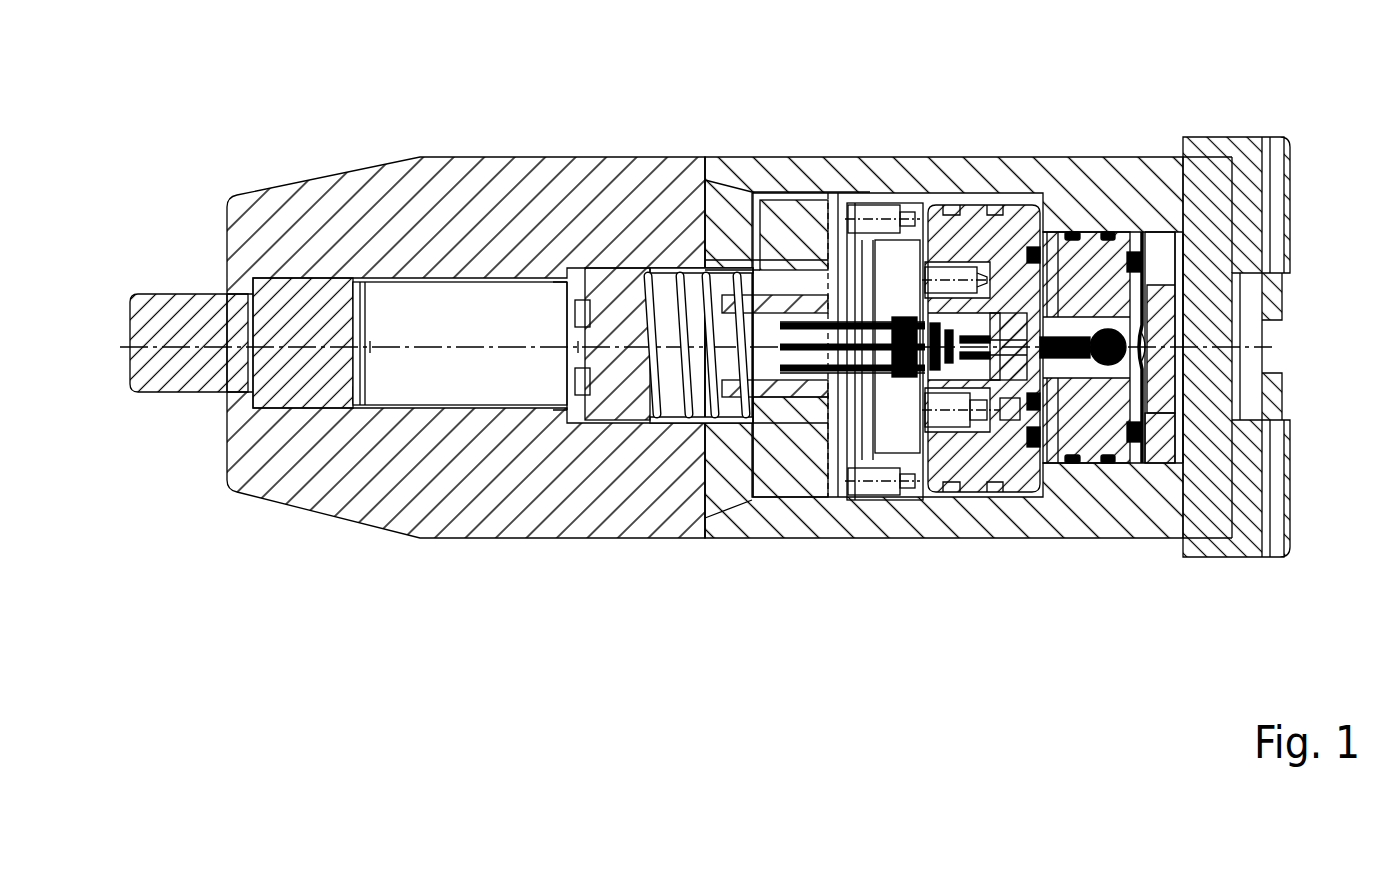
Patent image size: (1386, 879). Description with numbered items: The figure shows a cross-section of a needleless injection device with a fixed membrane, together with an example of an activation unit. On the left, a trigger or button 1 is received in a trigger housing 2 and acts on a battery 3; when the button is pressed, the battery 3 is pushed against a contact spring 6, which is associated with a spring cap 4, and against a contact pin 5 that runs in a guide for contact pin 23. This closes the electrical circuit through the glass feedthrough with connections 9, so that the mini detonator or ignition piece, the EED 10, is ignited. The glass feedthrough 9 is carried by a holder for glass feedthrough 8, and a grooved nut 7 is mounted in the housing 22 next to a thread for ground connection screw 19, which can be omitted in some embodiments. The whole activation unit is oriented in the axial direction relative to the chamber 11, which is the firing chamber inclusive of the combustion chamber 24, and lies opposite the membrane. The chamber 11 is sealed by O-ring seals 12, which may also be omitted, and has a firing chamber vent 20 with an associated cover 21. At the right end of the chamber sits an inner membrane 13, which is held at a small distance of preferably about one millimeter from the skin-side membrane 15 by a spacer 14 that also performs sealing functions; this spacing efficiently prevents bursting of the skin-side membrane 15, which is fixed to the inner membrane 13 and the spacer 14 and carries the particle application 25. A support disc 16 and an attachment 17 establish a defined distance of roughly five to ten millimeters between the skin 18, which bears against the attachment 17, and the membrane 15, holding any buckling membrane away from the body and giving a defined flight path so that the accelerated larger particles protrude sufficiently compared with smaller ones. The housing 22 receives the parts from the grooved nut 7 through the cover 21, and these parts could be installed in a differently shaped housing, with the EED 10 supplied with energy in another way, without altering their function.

The trigger, button 1 is at (188, 307).
The trigger housing 2 is at (470, 190).
The battery 3 is at (463, 378).
The spring cap 4 is at (625, 397).
The contact pin 5 is at (622, 353).
The contact spring 6 is at (670, 300).
The grooved nut 7 is at (867, 425).
The holder for glass feedthrough 8 is at (1023, 255).
The glass feedthrough with connections 9 is at (853, 233).
The mini detonator or ignition piece, EED 10 is at (1147, 313).
The firing chamber or chamber 11 is at (1120, 410).
The O-ring seal of the firing chamber 12 is at (1112, 222).
The inner membrane 13 is at (1143, 372).
The spacer 14 is at (1142, 445).
The skin-side membrane 15 is at (1150, 349).
The support disc 16 is at (1167, 453).
The attachment 17 is at (1245, 485).
The skin or the surface to be penetrated 18 is at (718, 350).
The thread for ground connection screw 19 is at (897, 313).
The firing chamber vent 20 is at (1017, 417).
The cover, vent 21 is at (957, 417).
The housing for parts 7-21 22 is at (1073, 190).
The guide for contact pin 23 is at (795, 410).
The combustion chamber 24 is at (1078, 372).
The particle application 25 is at (1117, 331).